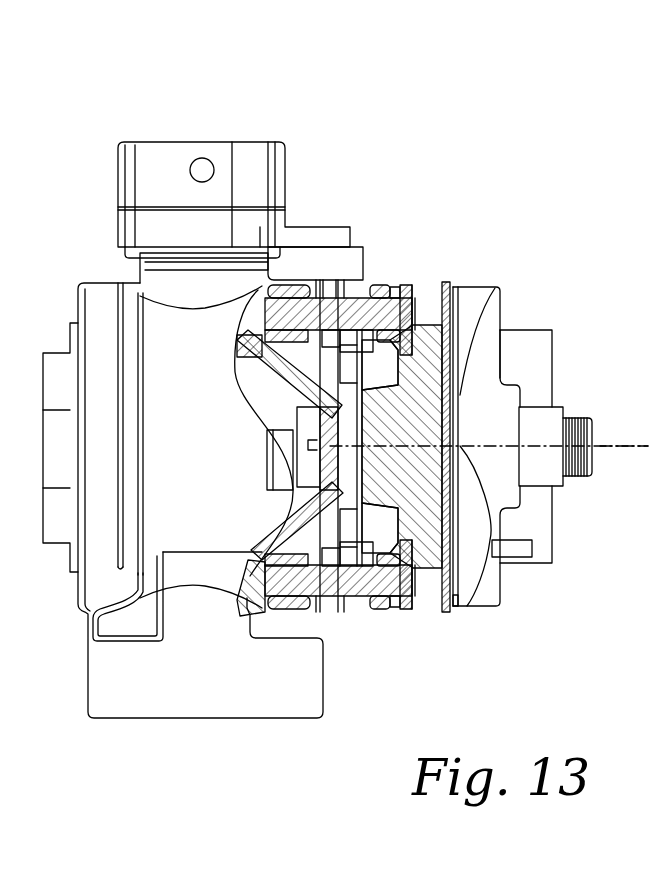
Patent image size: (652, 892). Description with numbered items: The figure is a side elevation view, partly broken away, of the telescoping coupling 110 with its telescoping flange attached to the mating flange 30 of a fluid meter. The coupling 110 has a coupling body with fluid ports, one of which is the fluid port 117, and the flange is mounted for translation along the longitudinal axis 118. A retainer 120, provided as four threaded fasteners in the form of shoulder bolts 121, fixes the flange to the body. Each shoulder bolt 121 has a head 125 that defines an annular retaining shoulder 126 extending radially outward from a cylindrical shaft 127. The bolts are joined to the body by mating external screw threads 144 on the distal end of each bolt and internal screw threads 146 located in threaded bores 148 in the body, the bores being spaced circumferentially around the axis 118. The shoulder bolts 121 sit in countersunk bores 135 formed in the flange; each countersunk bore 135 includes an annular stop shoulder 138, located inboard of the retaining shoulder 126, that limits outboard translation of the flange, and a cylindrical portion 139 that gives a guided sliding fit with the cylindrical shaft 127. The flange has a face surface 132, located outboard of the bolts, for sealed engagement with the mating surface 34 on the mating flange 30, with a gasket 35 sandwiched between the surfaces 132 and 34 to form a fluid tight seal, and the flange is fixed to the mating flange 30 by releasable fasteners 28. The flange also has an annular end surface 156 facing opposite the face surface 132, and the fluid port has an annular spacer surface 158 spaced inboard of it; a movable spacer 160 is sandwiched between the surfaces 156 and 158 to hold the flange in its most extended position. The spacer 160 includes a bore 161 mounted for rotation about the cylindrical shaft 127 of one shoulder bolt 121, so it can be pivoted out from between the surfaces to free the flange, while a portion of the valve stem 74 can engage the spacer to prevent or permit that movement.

The telescoping coupling 110 is at (298, 147).
The valve stem 74 is at (150, 222).
The fluid port 117 is at (103, 727).
The threaded bore 148 is at (265, 301).
The internal screw threads 146 is at (262, 302).
The external screw threads 144 is at (292, 357).
The annular end surface 156 is at (318, 386).
The annular spacer surface 158 is at (317, 412).
The cylindrical shaft 127 is at (330, 297).
The retainer 120 is at (316, 427).
The shoulder bolt 121 is at (311, 297).
The movable spacer 160 is at (360, 296).
The bore 161 is at (369, 296).
The cylindrical portion 139 is at (385, 292).
The annular retaining shoulder 126 is at (392, 284).
The head 125 is at (408, 286).
The face surface 132 is at (458, 510).
The annular stop shoulder 138 is at (458, 380).
The countersunk bore 135 is at (425, 317).
The mating flange 30 is at (502, 288).
The gasket 35 is at (460, 480).
The mating surface 34 is at (448, 556).
The releasable fastener 28 is at (582, 416).
The longitudinal axis 118 is at (613, 448).